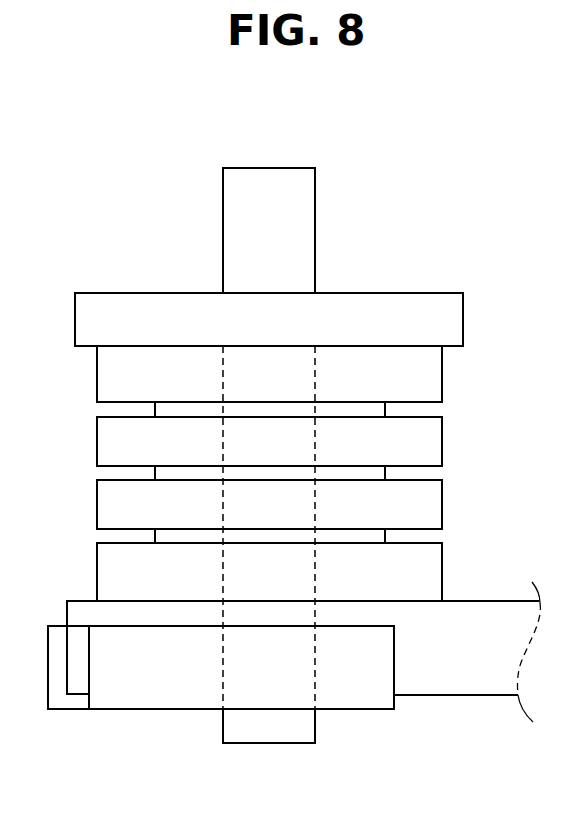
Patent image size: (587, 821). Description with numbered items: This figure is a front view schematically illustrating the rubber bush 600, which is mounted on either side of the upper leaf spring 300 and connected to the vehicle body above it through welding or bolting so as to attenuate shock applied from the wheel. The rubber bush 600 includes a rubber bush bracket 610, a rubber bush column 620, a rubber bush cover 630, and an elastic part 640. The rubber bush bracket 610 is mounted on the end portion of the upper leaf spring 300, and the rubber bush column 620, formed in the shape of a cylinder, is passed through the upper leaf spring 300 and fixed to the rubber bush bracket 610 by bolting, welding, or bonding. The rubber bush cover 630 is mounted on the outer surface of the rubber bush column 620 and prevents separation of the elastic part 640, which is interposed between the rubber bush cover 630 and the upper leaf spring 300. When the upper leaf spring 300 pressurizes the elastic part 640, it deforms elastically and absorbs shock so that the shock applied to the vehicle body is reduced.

The rubber bush 600 is at (118, 191).
The rubber bush column 620 is at (292, 218).
The rubber bush cover 630 is at (444, 323).
The elastic part 640 is at (423, 445).
The rubber bush bracket 610 is at (143, 684).
The upper leaf spring 300 is at (453, 667).